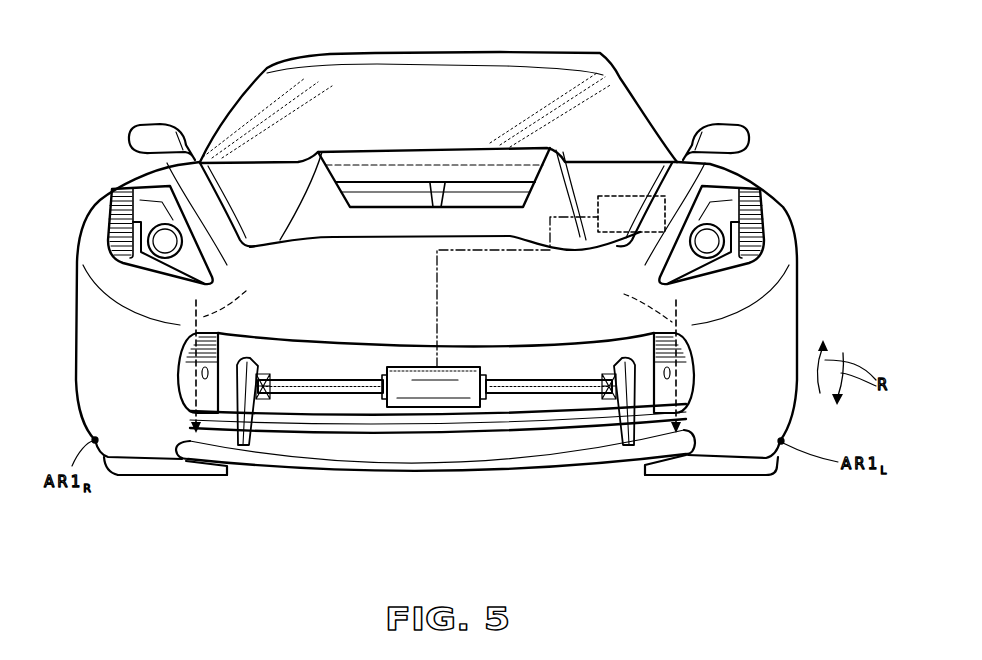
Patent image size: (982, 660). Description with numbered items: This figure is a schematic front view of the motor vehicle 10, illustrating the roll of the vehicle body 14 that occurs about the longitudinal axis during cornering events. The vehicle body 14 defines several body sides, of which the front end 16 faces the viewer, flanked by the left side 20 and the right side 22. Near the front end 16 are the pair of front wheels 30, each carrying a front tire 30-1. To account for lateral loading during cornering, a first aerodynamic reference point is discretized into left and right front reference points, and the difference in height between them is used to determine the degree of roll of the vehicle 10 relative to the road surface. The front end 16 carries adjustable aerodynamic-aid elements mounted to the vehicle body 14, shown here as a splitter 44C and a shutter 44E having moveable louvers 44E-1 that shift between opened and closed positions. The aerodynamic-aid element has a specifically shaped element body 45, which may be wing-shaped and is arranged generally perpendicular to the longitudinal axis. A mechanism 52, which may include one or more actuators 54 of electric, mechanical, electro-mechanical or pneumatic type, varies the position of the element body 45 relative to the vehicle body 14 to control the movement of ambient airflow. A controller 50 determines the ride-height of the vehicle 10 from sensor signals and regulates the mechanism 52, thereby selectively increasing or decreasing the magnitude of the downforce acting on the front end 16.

The motor vehicle 10 is at (776, 135).
The vehicle body 14 is at (320, 97).
The front end 16 is at (437, 371).
The left side 20 is at (767, 190).
The right side 22 is at (107, 190).
The front wheels 30 is at (160, 471).
The front tires 30-1 is at (193, 468).
The splitter 44C is at (308, 487).
The shutter 44E is at (470, 171).
The moveable louvers 44E-1 is at (410, 198).
The element body 45 is at (455, 472).
The controller 50 is at (627, 196).
The mechanism 52 is at (499, 410).
The actuator 54 is at (420, 408).